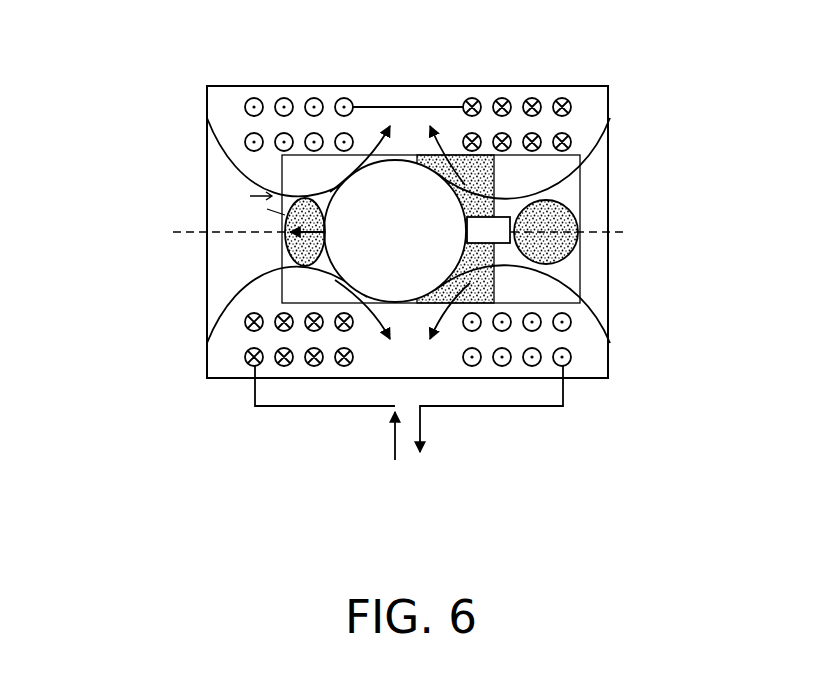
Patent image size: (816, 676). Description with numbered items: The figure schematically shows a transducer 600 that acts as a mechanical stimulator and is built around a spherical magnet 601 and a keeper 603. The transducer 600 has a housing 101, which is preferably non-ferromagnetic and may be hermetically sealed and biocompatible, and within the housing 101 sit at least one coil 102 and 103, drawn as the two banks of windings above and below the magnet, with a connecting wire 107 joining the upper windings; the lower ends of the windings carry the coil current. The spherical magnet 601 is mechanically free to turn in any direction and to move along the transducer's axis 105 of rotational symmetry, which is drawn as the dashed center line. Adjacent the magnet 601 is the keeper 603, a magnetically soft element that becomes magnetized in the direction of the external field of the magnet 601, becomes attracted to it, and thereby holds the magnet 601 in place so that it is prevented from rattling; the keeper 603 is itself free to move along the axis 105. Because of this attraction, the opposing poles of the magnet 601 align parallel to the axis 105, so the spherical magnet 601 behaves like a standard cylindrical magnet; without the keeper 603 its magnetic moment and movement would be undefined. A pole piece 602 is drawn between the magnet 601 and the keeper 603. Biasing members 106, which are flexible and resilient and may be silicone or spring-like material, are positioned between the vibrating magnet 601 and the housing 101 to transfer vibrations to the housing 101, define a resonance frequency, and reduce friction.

The transducer 600 is at (77, 431).
The housing 101 is at (230, 86).
The coil 102 is at (250, 134).
The coil 103 is at (572, 108).
The axis of rotational symmetry 105 is at (624, 232).
The biasing members 106 is at (290, 256).
The coil wire 107 is at (412, 105).
The spherical magnet 601 is at (406, 304).
The pole piece 602 is at (478, 168).
The keeper 603 is at (499, 222).